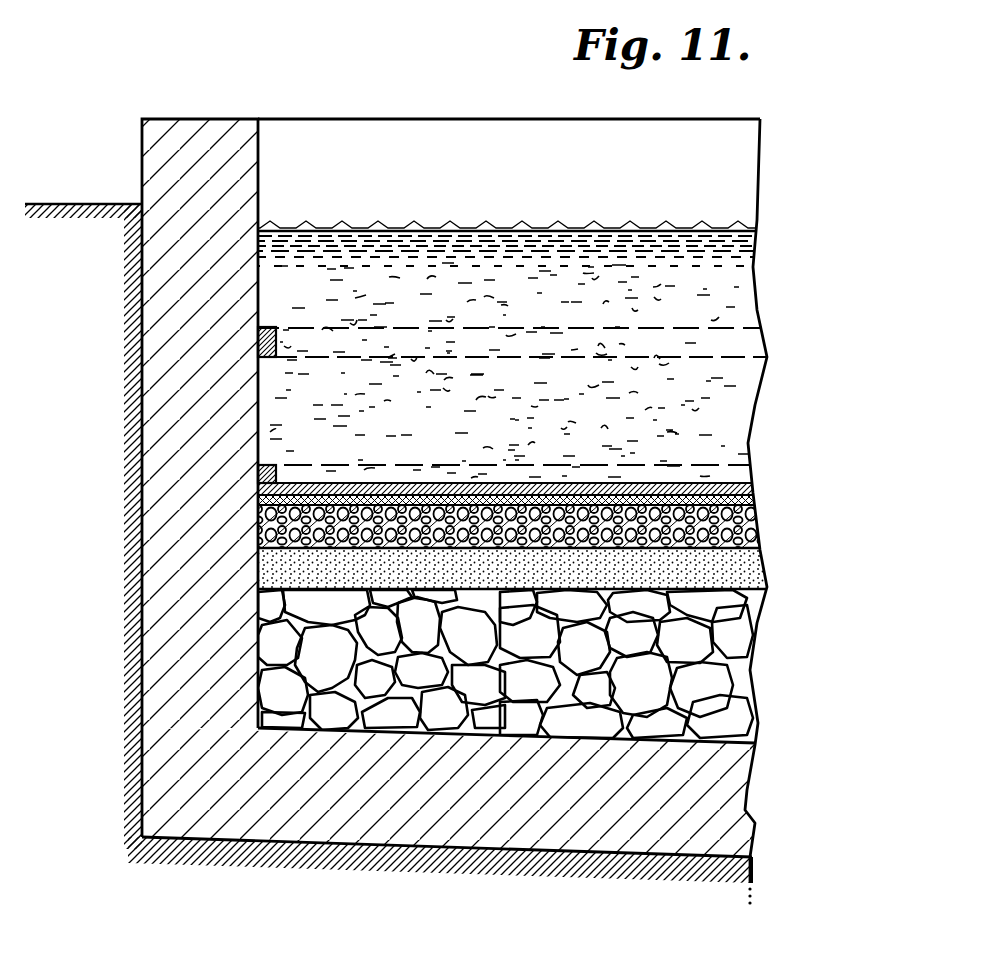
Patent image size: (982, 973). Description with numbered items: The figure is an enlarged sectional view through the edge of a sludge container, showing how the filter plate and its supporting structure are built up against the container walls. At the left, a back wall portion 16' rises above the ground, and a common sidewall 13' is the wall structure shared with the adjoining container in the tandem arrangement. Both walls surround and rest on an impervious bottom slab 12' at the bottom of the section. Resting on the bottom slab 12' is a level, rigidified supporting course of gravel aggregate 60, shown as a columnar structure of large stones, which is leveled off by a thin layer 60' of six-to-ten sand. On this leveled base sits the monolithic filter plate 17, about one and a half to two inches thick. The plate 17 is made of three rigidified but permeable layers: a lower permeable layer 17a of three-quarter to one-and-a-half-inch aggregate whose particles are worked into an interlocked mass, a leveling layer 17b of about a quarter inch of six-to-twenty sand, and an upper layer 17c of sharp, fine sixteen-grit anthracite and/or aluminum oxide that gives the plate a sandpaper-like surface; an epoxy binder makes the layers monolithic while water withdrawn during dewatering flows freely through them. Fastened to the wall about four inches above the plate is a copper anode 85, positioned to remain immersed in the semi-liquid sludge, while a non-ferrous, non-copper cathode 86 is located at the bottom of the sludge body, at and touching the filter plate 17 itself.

The back wall portion 16' is at (200, 430).
The common sidewall 13' is at (516, 462).
The anode 85 is at (262, 343).
The cathode 86 is at (262, 473).
The filter plate 17 is at (551, 472).
The upper layer of sharp fine grit aggregate 17c is at (672, 484).
The leveling layer 17b is at (676, 504).
The lower permeable layer 17a is at (720, 520).
The leveling sand layer 60' is at (411, 553).
The supporting course of aggregate 60 is at (553, 664).
The impervious bottom slab 12' is at (400, 780).